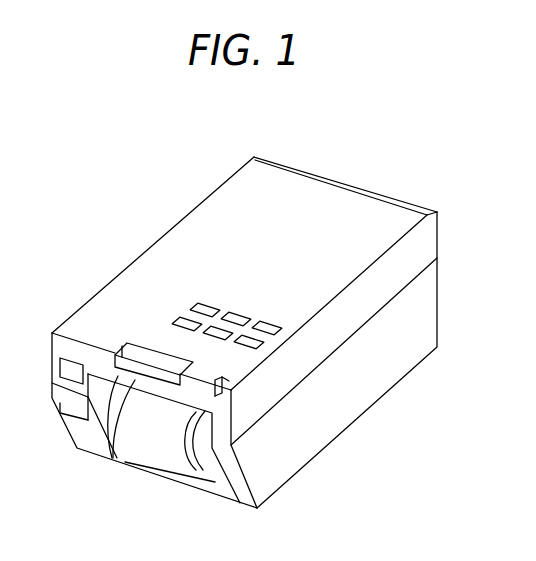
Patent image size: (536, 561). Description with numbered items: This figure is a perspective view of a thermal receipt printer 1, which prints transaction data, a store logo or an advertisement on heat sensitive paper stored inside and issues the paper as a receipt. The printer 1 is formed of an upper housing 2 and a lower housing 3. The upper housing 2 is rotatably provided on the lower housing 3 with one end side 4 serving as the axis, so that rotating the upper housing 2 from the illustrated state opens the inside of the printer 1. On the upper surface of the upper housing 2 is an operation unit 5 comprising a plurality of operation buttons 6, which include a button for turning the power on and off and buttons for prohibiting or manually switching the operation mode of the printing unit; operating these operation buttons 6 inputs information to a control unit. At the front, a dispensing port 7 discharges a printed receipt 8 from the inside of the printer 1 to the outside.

The printer 1 is at (280, 133).
The upper housing 2 is at (203, 210).
The lower housing 3 is at (352, 410).
The one end side 4 is at (255, 157).
The operation unit 5 is at (207, 296).
The operation buttons 6 is at (181, 320).
The dispensing port 7 is at (148, 400).
The receipt 8 is at (198, 445).